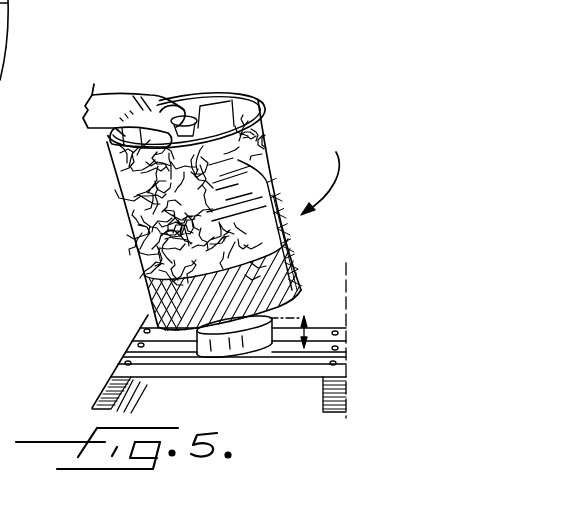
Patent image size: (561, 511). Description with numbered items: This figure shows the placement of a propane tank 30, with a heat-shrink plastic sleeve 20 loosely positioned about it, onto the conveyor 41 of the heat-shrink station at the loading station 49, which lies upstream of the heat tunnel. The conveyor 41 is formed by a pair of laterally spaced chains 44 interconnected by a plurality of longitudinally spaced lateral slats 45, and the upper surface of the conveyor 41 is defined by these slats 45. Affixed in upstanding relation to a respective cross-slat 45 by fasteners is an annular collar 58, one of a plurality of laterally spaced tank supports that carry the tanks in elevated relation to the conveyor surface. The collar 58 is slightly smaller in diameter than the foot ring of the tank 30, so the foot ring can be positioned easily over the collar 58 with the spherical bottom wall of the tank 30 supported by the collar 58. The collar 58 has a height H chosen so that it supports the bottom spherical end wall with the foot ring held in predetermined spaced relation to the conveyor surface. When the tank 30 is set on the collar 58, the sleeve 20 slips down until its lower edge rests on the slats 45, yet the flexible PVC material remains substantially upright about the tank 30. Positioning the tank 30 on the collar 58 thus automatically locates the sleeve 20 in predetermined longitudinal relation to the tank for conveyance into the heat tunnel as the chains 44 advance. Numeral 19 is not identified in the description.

The rim of container 19 is at (234, 94).
The heat-shrink plastic sleeve 20 is at (260, 120).
The tank 30 is at (116, 179).
The conveyor 41 is at (135, 314).
The chains 44 is at (100, 397).
The lateral slats 45 is at (126, 363).
The loading station 49 is at (320, 171).
The annular collar 58 is at (242, 352).
The height H is at (307, 336).